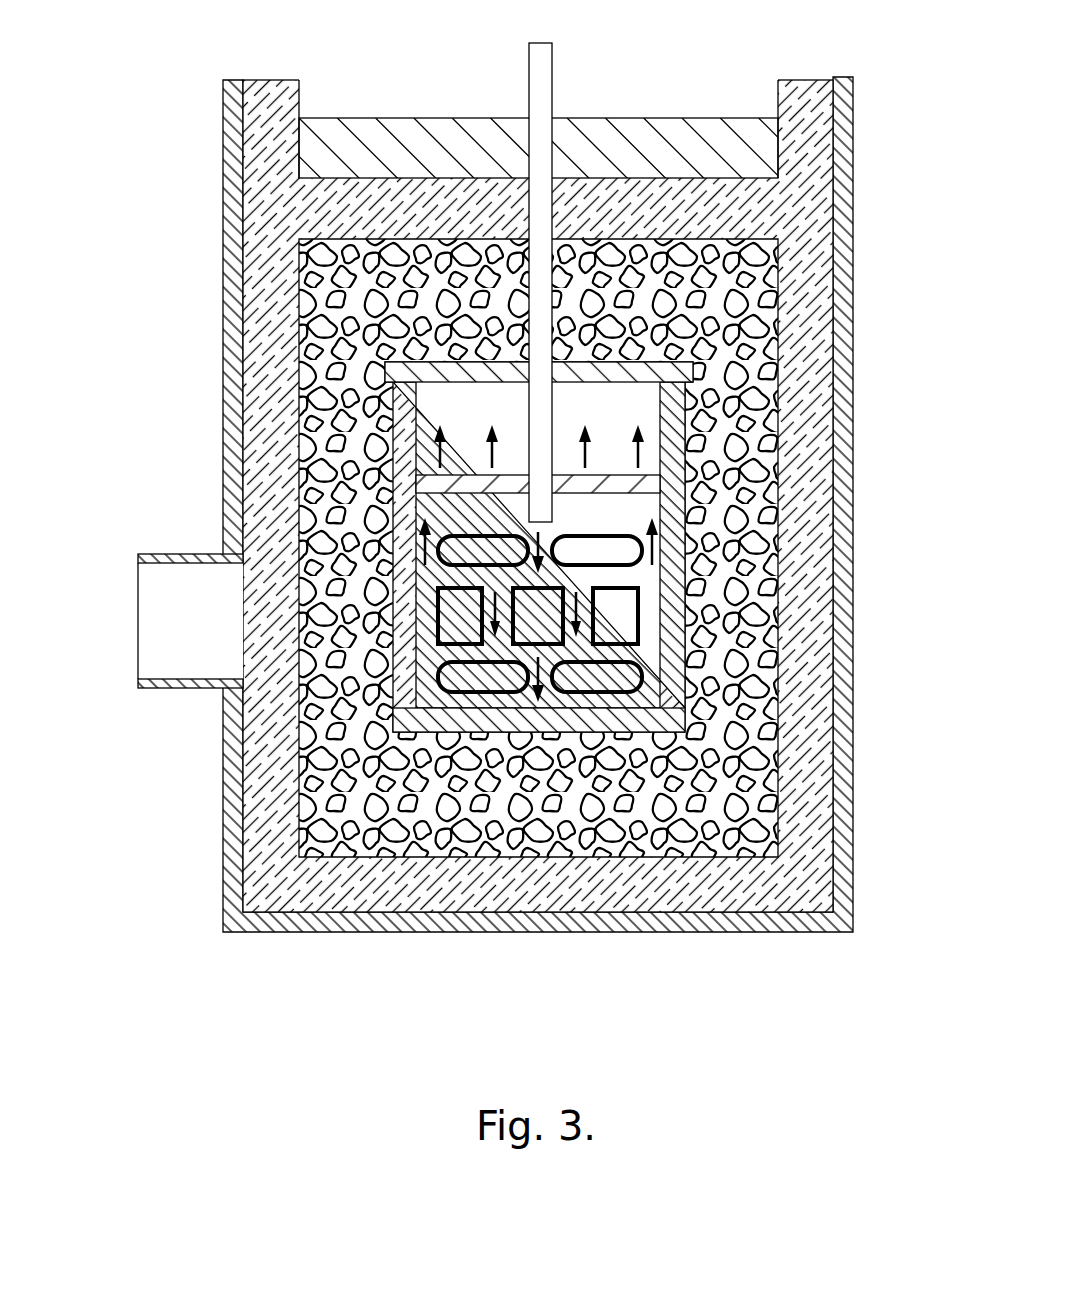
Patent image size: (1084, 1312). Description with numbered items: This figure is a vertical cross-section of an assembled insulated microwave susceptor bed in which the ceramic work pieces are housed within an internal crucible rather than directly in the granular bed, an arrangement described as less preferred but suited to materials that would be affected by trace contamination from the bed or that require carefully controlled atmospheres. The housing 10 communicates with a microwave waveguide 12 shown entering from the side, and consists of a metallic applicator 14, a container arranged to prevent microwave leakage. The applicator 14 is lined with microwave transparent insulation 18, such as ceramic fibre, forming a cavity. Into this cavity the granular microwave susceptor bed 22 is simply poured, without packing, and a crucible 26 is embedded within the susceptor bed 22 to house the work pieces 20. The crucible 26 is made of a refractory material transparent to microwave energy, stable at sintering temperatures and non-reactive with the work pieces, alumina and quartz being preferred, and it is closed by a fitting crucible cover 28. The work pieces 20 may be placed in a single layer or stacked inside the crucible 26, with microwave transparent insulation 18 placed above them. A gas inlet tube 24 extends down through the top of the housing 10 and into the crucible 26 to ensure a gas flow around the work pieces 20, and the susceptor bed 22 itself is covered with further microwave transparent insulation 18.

The housing 10 is at (522, 510).
The microwave waveguide 12 is at (166, 688).
The metallic applicator 14 is at (852, 157).
The microwave transparent insulation 18 is at (662, 473).
The work pieces 20 is at (586, 680).
The granular microwave susceptor bed 22 is at (682, 770).
The gas inlet tube 24 is at (547, 87).
The crucible 26 is at (682, 537).
The crucible cover 28 is at (462, 360).